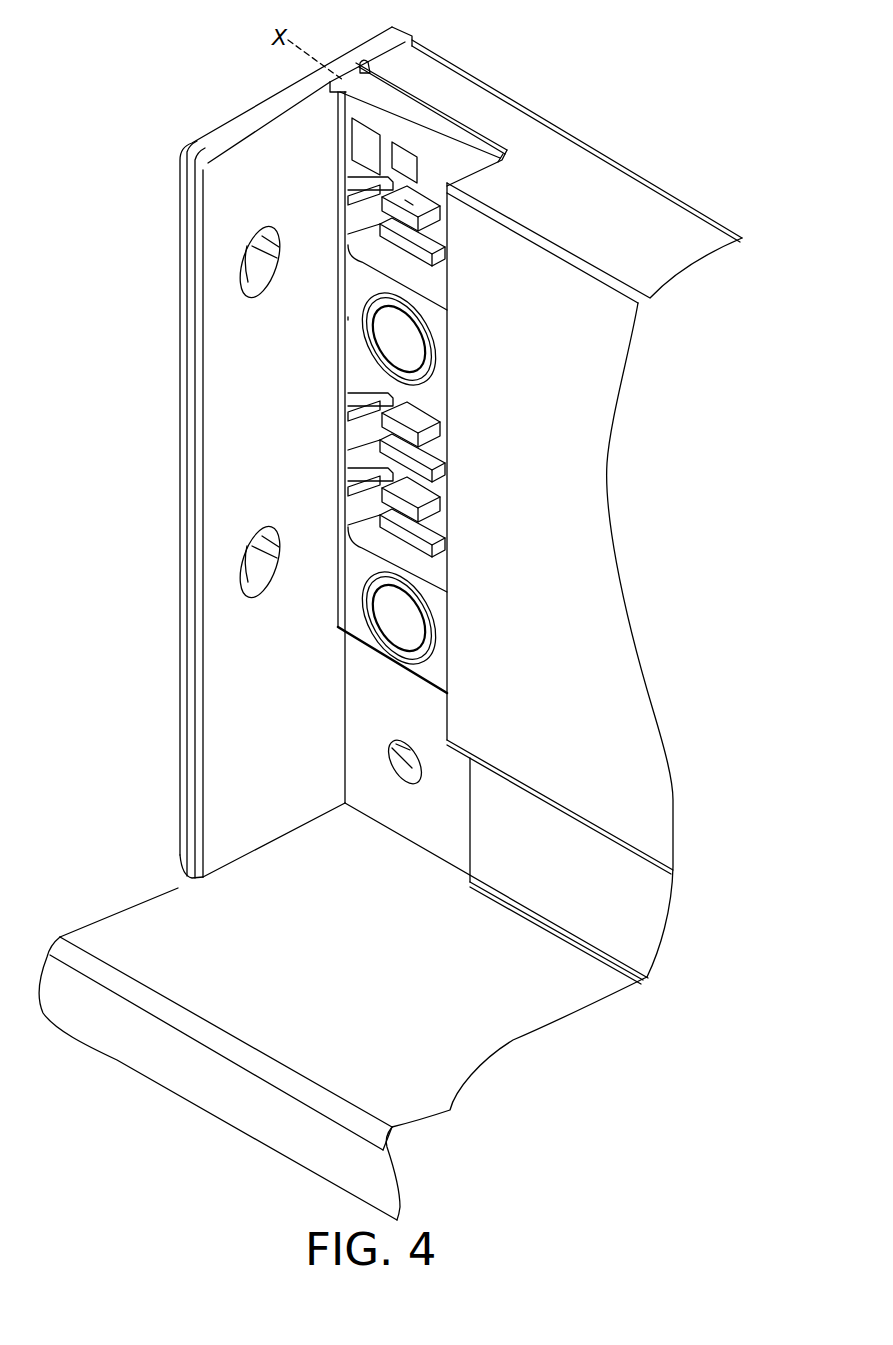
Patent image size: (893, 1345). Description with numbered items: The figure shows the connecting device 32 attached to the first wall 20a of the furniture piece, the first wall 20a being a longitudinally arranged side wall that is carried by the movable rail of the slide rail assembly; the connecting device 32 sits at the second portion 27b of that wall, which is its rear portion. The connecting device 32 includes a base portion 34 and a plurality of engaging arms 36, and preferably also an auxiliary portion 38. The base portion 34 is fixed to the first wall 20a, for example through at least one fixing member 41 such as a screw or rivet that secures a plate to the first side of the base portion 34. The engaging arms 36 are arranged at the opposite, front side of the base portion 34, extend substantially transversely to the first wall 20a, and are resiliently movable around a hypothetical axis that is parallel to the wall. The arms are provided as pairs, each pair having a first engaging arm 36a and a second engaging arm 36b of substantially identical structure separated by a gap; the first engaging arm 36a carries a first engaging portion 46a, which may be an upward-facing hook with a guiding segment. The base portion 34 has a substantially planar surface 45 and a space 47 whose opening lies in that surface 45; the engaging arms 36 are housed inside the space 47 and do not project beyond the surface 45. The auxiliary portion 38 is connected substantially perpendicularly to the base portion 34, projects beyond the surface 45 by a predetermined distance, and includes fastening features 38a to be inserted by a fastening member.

The connecting device 32 is at (137, 137).
The base portion 34 is at (390, 100).
The second portion 27b is at (490, 117).
The first engaging arm 36a is at (448, 187).
The first wall 20a is at (717, 207).
The auxiliary portion 38 is at (237, 465).
The fastening feature 38a is at (243, 255).
The space 47 is at (357, 550).
The surface 45 is at (348, 317).
The first engaging portion 46a is at (413, 205).
The engaging arm 36 is at (440, 242).
The second engaging arm 36b is at (436, 192).
The fixing member 41 is at (400, 338).